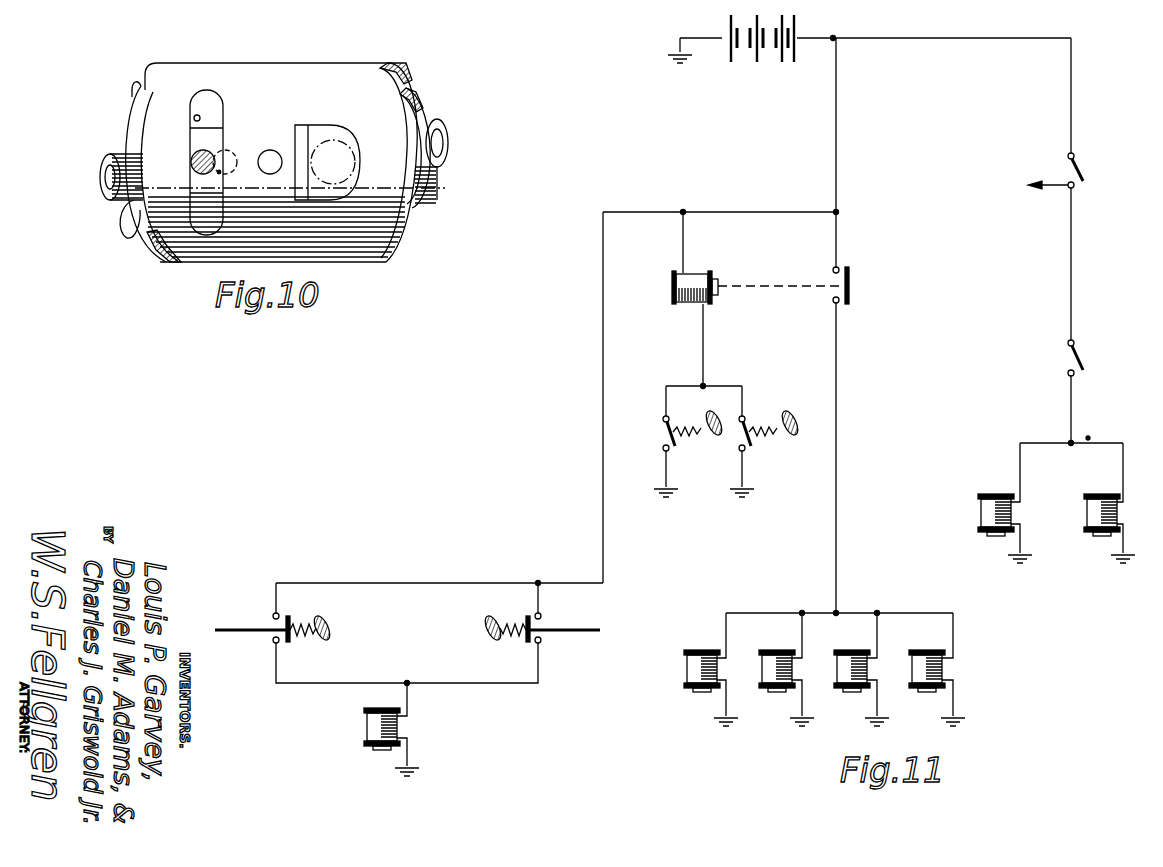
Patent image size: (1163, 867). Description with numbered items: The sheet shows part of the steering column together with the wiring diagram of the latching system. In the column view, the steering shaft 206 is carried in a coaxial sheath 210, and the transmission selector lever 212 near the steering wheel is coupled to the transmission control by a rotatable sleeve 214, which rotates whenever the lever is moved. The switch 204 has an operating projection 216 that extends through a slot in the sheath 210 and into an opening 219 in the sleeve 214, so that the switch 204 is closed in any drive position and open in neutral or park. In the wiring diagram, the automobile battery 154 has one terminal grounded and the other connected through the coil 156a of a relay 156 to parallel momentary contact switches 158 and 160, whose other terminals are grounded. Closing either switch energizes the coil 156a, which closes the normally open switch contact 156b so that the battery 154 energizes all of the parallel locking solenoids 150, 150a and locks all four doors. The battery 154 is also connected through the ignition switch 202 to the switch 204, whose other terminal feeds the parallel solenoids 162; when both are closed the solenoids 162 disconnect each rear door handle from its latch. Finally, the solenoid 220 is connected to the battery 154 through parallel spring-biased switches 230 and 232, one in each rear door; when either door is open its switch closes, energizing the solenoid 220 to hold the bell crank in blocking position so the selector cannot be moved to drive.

In FIG. 10, the sheath 210 is at (288, 73).
In FIG. 10, the transmission selector lever 212 is at (194, 118).
In FIG. 10, the rotatable sleeve 214 is at (138, 97).
In FIG. 10, the operating projection 216 is at (215, 158).
In FIG. 10, the opening 219 is at (219, 172).
In FIG. 10, the steering shaft 206 is at (105, 183).
In FIG. 11, the automobile battery 154 is at (768, 55).
In FIG. 11, the ignition switch 202 is at (1080, 170).
In FIG. 11, the switch 204 is at (1080, 360).
In FIG. 11, the relay 156 is at (791, 299).
In FIG. 11, the relay coil 156a is at (695, 272).
In FIG. 11, the switch contact 156b is at (850, 281).
In FIG. 11, the momentary contact switch 158 is at (668, 440).
In FIG. 11, the momentary contact switch 160 is at (752, 426).
In FIG. 11, the solenoids 162 is at (992, 513).
In FIG. 11, the locking solenoids 150 is at (690, 672).
In FIG. 11, the locking solenoids 150a is at (843, 675).
In FIG. 11, the switch 230 is at (280, 645).
In FIG. 11, the switch 232 is at (528, 645).
In FIG. 11, the solenoid 220 is at (376, 730).